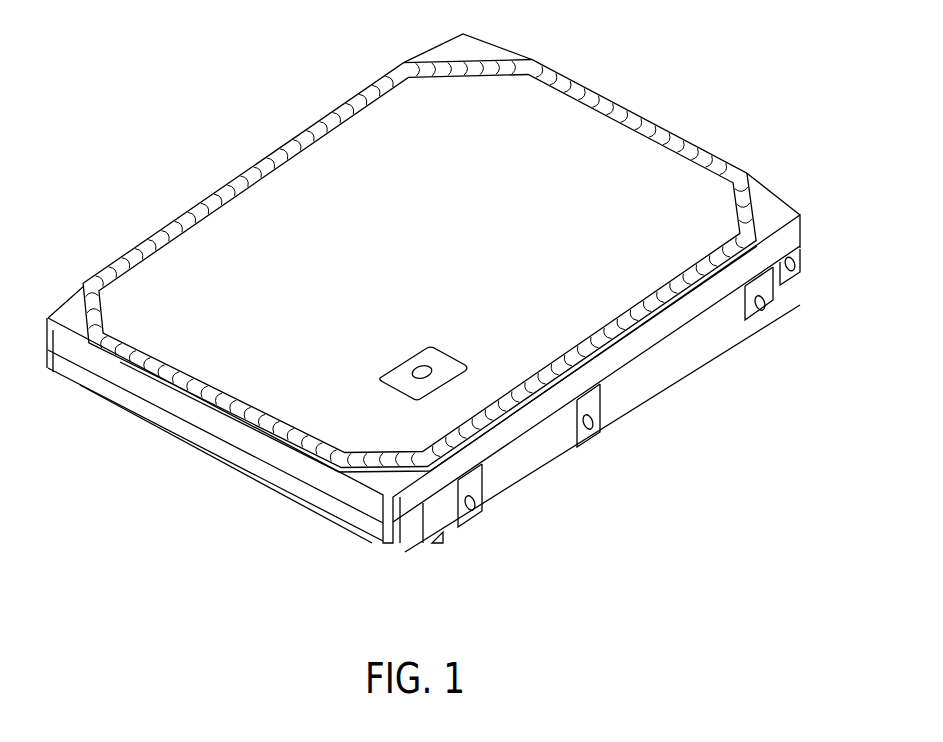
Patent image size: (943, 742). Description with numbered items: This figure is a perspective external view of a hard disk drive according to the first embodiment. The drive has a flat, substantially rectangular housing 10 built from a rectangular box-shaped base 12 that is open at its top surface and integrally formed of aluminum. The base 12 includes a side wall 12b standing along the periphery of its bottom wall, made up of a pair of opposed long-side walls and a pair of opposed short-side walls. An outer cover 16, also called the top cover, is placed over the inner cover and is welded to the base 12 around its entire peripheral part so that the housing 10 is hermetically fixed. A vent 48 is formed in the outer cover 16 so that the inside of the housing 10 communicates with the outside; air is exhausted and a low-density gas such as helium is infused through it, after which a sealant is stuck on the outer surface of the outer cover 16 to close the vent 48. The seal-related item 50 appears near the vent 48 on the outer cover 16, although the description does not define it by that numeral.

The housing 10 is at (262, 114).
The base 12 is at (641, 377).
The side wall 12b is at (272, 476).
The outer cover 16 is at (580, 130).
The vent 48 is at (412, 378).
The seal member (patch) 50 is at (437, 357).